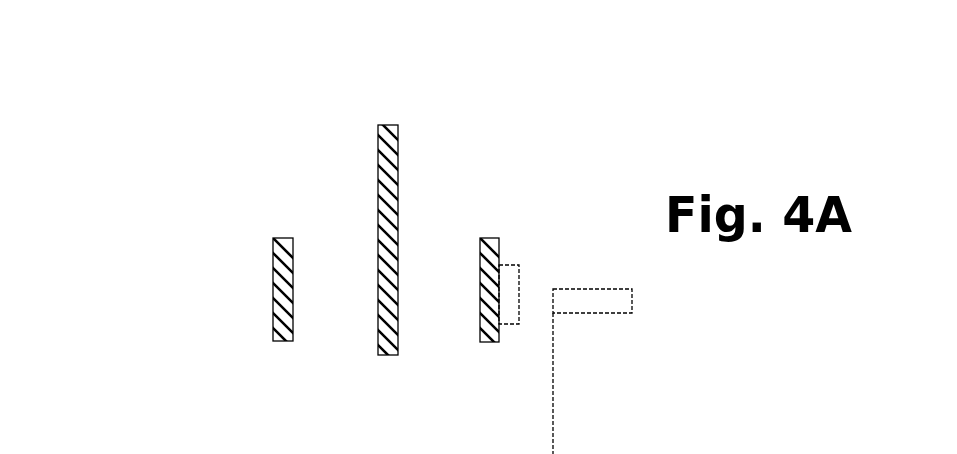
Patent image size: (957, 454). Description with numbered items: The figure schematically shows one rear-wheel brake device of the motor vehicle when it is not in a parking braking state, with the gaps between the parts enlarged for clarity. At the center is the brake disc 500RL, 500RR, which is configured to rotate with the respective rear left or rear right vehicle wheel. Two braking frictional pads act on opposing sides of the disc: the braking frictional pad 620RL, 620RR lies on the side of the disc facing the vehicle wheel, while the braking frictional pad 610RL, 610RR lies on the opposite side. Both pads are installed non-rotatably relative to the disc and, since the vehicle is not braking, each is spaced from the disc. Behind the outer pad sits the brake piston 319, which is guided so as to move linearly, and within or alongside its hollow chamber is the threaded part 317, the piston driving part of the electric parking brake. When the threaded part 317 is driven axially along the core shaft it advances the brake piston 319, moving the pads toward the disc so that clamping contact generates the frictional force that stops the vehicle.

The brake disc 500RL is at (388, 194).
The brake disc 500RR is at (396, 125).
The braking frictional pad 620RL is at (179, 308).
The braking frictional pad 620RR is at (275, 330).
The braking frictional pad 610RL is at (572, 307).
The braking frictional pad 610RR is at (498, 330).
The brake piston 319 is at (510, 287).
The threaded part 317 is at (584, 302).